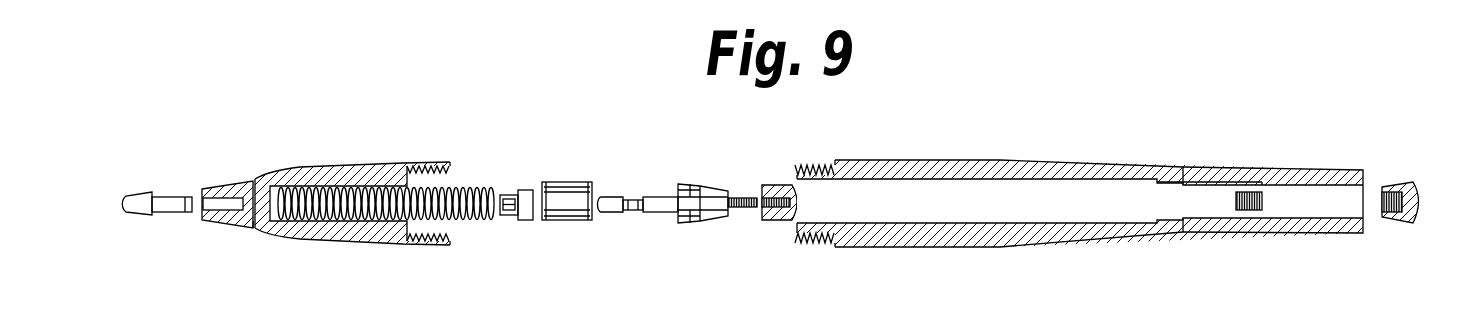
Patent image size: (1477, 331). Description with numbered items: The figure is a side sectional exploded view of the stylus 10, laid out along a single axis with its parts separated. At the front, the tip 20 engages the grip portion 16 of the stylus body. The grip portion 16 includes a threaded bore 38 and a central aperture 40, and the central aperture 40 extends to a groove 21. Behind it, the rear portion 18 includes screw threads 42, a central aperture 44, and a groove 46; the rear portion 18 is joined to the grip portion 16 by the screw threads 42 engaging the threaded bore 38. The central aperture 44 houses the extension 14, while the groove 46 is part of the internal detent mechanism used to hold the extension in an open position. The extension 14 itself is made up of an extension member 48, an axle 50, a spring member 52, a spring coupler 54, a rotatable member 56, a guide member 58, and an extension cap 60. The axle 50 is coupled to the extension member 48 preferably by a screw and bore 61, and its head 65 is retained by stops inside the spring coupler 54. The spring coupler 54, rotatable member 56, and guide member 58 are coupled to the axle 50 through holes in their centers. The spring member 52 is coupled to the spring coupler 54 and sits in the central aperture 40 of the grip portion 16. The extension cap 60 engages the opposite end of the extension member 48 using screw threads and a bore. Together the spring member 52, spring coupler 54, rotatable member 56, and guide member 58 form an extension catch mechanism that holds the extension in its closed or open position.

The stylus 10 is at (227, 81).
The extension 14 is at (657, 181).
The grip portion 16 is at (793, 205).
The rear portion 18 is at (793, 202).
The tip 20 is at (121, 203).
The groove 21 is at (254, 229).
The threaded bore 38 is at (442, 179).
The central aperture 40 is at (263, 200).
The screw threads 42 is at (815, 166).
The central aperture 44 is at (1290, 197).
The groove 46 is at (1185, 167).
The extension member 48 is at (1102, 198).
The axle 50 is at (663, 211).
The spring member 52 is at (328, 188).
The spring coupler 54 is at (523, 191).
The rotatable member 56 is at (582, 190).
The guide member 58 is at (715, 222).
The extension cap 60 is at (1413, 183).
The screw and bore 61 is at (770, 196).
The head 65 is at (613, 213).